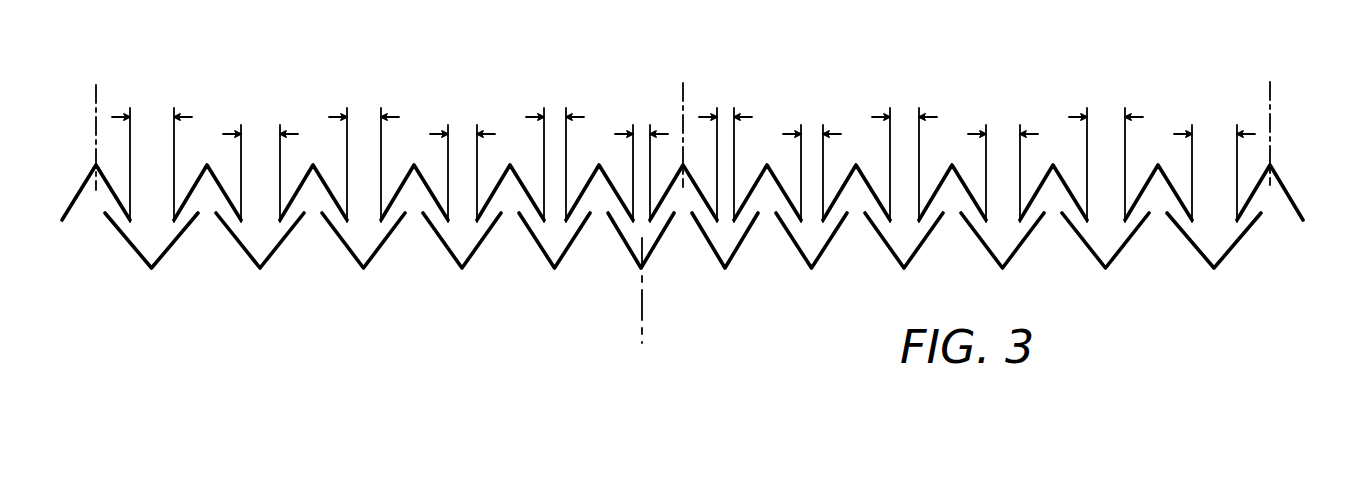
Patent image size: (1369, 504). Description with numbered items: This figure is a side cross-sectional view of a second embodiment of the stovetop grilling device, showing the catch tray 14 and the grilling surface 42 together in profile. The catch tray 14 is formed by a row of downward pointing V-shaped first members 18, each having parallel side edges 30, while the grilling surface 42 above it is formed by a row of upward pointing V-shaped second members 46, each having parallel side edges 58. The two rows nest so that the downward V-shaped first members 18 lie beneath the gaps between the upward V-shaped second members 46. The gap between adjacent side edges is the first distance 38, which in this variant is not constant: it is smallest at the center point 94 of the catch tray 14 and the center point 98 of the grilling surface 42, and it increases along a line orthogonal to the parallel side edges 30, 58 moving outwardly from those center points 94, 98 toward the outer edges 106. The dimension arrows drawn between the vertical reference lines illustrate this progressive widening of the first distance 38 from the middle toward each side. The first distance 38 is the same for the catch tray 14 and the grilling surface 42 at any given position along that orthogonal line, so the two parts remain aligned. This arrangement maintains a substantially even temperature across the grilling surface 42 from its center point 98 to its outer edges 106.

The catch tray 14 is at (431, 283).
The first members 18 is at (1233, 250).
The parallel side edges 30 is at (501, 217).
The first distance 38 is at (155, 115).
The grilling surface 42 is at (87, 180).
The second members 46 is at (1288, 188).
The parallel side edges 58 is at (452, 213).
The center point 94 is at (643, 310).
The center point 98 is at (683, 92).
The outer edges 106 is at (97, 105).